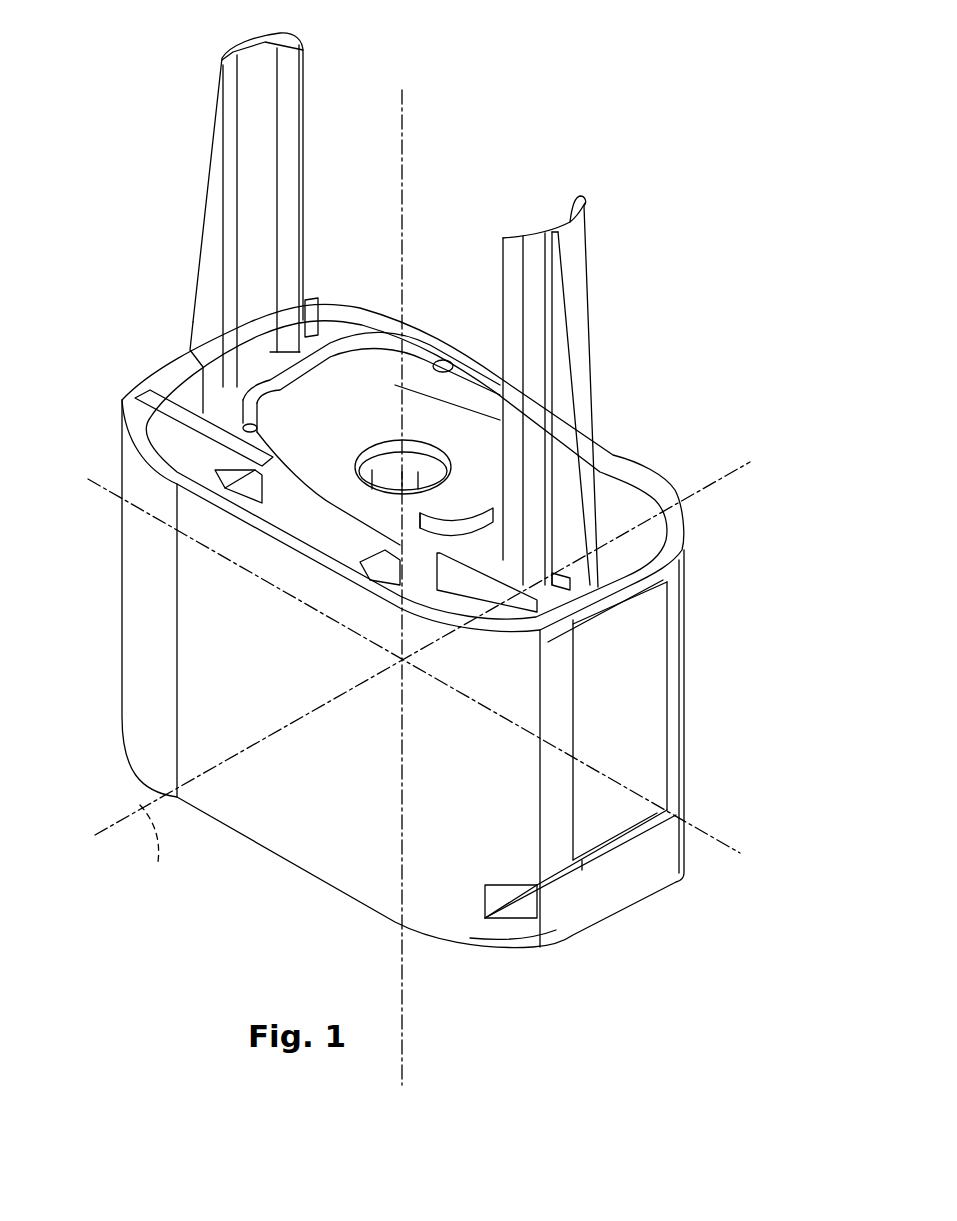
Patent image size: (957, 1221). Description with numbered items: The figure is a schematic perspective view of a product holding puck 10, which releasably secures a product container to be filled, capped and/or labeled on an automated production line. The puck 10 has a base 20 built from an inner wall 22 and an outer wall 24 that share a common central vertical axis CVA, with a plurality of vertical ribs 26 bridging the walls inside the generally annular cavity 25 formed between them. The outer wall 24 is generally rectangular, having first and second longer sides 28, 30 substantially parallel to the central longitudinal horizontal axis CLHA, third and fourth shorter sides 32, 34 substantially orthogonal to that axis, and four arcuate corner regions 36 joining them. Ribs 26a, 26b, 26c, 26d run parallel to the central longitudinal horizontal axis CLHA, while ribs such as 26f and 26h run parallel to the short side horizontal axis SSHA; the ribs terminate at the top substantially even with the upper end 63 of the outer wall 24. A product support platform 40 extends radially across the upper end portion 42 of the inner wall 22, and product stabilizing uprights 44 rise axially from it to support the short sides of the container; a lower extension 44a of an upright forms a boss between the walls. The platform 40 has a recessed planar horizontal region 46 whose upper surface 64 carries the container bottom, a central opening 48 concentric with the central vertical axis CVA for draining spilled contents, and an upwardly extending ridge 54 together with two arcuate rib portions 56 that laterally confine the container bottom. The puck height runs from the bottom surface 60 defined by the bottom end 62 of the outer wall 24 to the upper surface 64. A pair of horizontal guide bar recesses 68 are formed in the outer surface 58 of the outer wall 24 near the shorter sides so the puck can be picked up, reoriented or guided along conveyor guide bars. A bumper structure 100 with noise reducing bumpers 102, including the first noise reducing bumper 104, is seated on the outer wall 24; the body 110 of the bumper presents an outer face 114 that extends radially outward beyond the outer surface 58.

The product holding puck 10 is at (600, 130).
The base 20 is at (703, 602).
The inner wall 22 is at (330, 482).
The outer wall 24 is at (150, 582).
The annular cavity 25 is at (610, 463).
The ribs 26 is at (137, 420).
The rib 26a is at (520, 598).
The rib 26b is at (345, 560).
The rib 26c is at (163, 390).
The rib 26d is at (320, 313).
The rib 26f is at (200, 477).
The rib 26h is at (450, 370).
The first longer side 28 is at (283, 813).
The second longer side 30 is at (633, 437).
The third shorter side 32 is at (657, 602).
The fourth shorter side 34 is at (122, 451).
The arcuate corner regions 36 is at (123, 415).
The product support platform 40 is at (387, 403).
The upper end portion 42 is at (407, 367).
The product stabilizing uprights 44 is at (230, 157).
The lower extension 44a is at (217, 388).
The recessed planar horizontal region 46 is at (446, 503).
The central opening 48 is at (378, 455).
The ridge 54 is at (280, 398).
The arcuate rib portions 56 is at (268, 503).
The outer surface 58 is at (243, 790).
The bottom surface 60 is at (310, 873).
The bottom end 62 is at (343, 890).
The upper end 63 is at (160, 462).
The upper surface 64 is at (303, 443).
The horizontal guide bar recesses 68 is at (122, 683).
The bumper structure 100 is at (640, 767).
The noise reducing bumpers 102 is at (613, 810).
The first noise reducing bumper 104 is at (613, 823).
The body 110 is at (597, 783).
The outer face 114 is at (660, 718).
The central vertical axis CVA is at (403, 122).
The short side horizontal axis SSHA is at (422, 676).
The central longitudinal horizontal axis CLHA is at (690, 828).